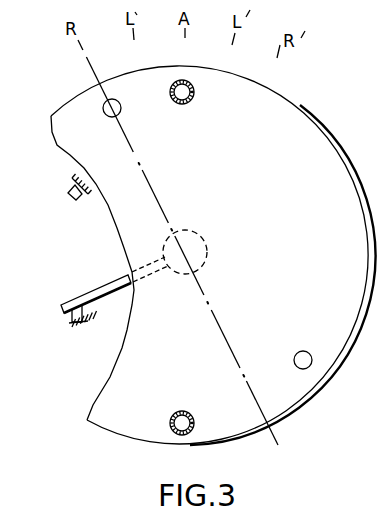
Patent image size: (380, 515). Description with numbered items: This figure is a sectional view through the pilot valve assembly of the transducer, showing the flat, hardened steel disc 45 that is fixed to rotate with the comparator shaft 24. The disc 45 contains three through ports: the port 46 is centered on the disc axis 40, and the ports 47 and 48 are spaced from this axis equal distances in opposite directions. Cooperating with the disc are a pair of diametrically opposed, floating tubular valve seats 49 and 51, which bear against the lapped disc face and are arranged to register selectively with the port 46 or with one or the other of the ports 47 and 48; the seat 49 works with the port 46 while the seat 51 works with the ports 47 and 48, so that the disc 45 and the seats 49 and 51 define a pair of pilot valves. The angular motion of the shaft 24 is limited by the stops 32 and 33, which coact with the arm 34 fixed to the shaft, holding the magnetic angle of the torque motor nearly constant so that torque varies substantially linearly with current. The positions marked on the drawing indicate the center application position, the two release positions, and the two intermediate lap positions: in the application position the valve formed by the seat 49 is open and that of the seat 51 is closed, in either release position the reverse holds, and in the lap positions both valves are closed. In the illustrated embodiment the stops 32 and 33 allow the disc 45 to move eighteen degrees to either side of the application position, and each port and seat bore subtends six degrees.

The comparator shaft 24 is at (208, 256).
The stop 32 is at (68, 321).
The stop 33 is at (68, 193).
The arm 34 is at (88, 292).
The disc axis 40 is at (233, 356).
The disc 45 is at (333, 146).
The port 46 is at (120, 102).
The port 47 is at (194, 419).
The port 48 is at (303, 351).
The tubular valve seat 49 is at (191, 102).
The tubular valve seat 51 is at (172, 411).